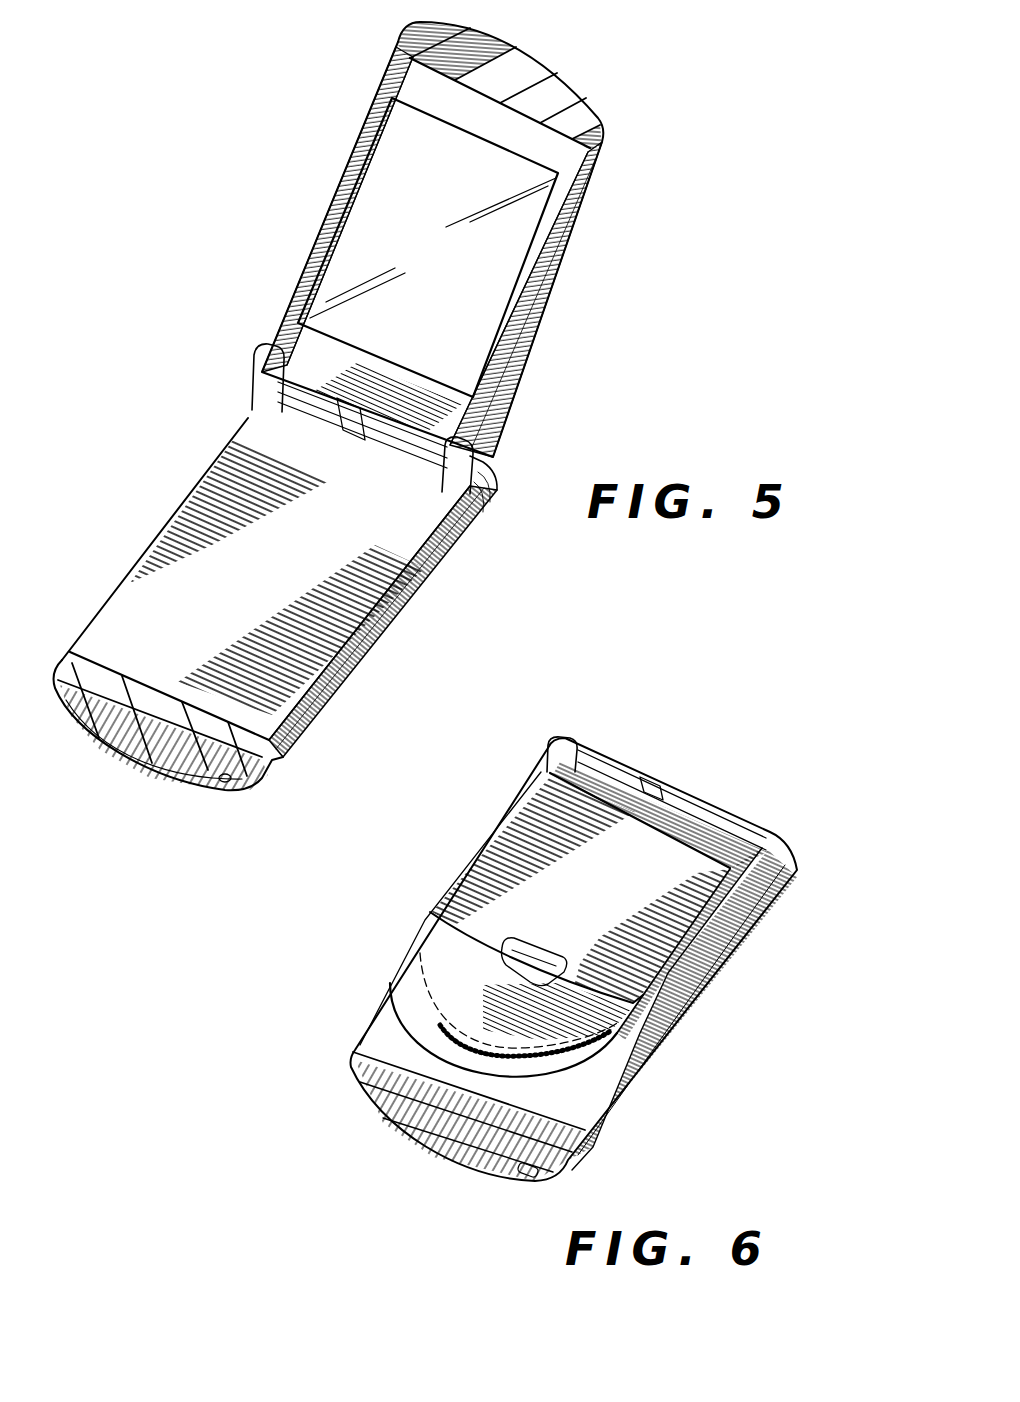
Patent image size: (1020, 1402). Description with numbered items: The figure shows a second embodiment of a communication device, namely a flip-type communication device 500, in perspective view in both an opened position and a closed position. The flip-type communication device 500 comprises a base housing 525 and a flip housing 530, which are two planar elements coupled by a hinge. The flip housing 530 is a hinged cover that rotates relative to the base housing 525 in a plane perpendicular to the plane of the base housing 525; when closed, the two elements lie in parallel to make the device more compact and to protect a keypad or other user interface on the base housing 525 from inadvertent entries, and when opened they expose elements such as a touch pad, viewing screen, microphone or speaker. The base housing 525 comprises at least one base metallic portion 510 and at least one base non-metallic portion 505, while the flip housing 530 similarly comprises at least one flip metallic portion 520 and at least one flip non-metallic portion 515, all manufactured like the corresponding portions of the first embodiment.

In FIG. 5, the flip-type communication device 500 is at (516, 529).
In FIG. 6, the flip-type communication device 500 is at (297, 1160).
In FIG. 5, the base non-metallic portion 505 is at (265, 778).
In FIG. 6, the base non-metallic portion 505 is at (540, 1173).
In FIG. 5, the base metallic portion 510 is at (373, 632).
In FIG. 6, the base metallic portion 510 is at (700, 982).
In FIG. 5, the flip non-metallic portion 515 is at (547, 85).
In FIG. 6, the flip non-metallic portion 515 is at (363, 1043).
In FIG. 5, the flip metallic portion 520 is at (533, 325).
In FIG. 6, the flip metallic portion 520 is at (527, 836).
In FIG. 5, the base housing 525 is at (180, 493).
In FIG. 6, the base housing 525 is at (628, 1098).
In FIG. 5, the flip housing 530 is at (340, 172).
In FIG. 6, the flip housing 530 is at (730, 865).